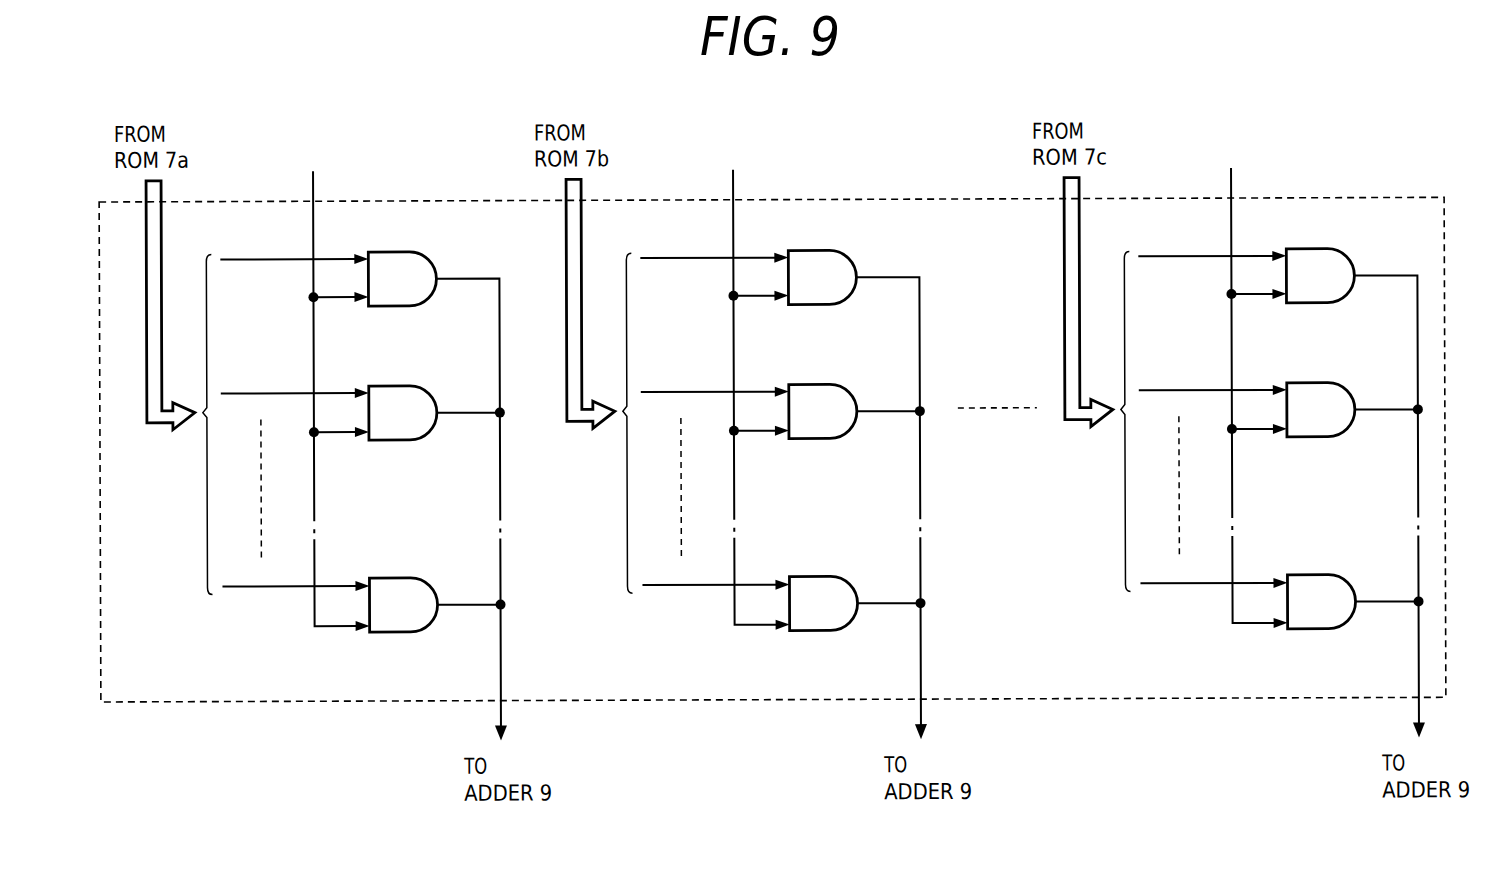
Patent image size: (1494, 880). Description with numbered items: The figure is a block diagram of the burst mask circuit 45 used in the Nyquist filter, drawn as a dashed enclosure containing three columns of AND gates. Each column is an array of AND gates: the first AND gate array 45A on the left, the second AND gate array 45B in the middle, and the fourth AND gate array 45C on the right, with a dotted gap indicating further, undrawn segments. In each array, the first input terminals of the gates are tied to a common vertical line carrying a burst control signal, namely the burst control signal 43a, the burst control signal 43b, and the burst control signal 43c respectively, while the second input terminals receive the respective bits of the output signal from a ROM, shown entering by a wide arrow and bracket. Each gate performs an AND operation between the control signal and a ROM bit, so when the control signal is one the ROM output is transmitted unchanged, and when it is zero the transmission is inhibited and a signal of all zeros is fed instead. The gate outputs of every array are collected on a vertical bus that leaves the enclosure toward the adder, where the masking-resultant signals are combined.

The burst mask circuit 45 is at (1403, 199).
The burst control signal 43a is at (329, 386).
The burst control signal 43b is at (749, 385).
The burst control signal 43c is at (1247, 383).
The first array of AND gates 45A is at (430, 645).
The second array of AND gates 45B is at (857, 494).
The fourth array of AND gates 45C is at (1355, 492).